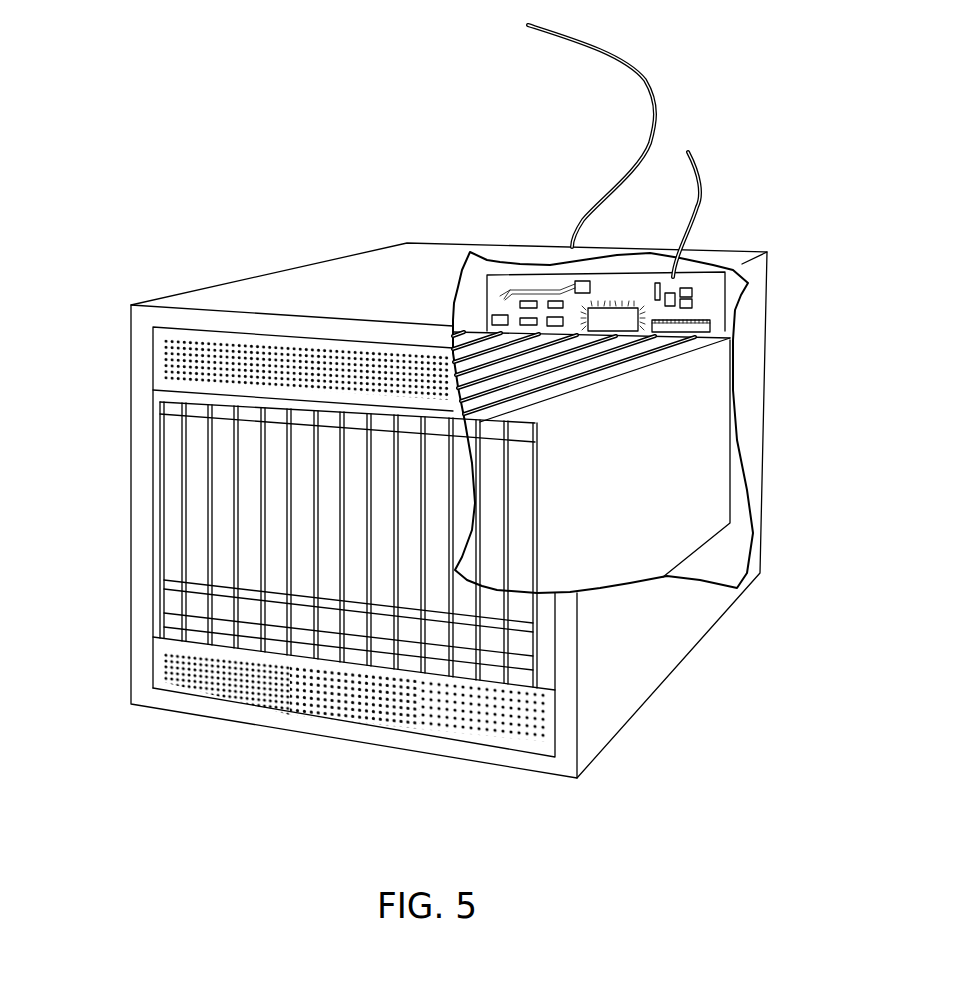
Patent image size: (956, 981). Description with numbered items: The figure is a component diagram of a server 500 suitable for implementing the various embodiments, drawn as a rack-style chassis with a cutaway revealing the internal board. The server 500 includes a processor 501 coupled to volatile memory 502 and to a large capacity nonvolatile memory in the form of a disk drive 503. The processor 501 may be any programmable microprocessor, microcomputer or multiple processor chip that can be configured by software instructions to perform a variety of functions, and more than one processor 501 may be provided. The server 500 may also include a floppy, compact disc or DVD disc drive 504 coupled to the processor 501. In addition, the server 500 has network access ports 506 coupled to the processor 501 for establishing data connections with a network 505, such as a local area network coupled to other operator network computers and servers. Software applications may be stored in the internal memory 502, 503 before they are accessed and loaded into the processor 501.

The server 500 is at (325, 261).
The processor 501 is at (617, 323).
The volatile memory 502 is at (702, 330).
The disk drive 503 is at (223, 470).
The disc drive 504 is at (196, 507).
The network 505 is at (652, 107).
The network access ports 506 is at (485, 320).